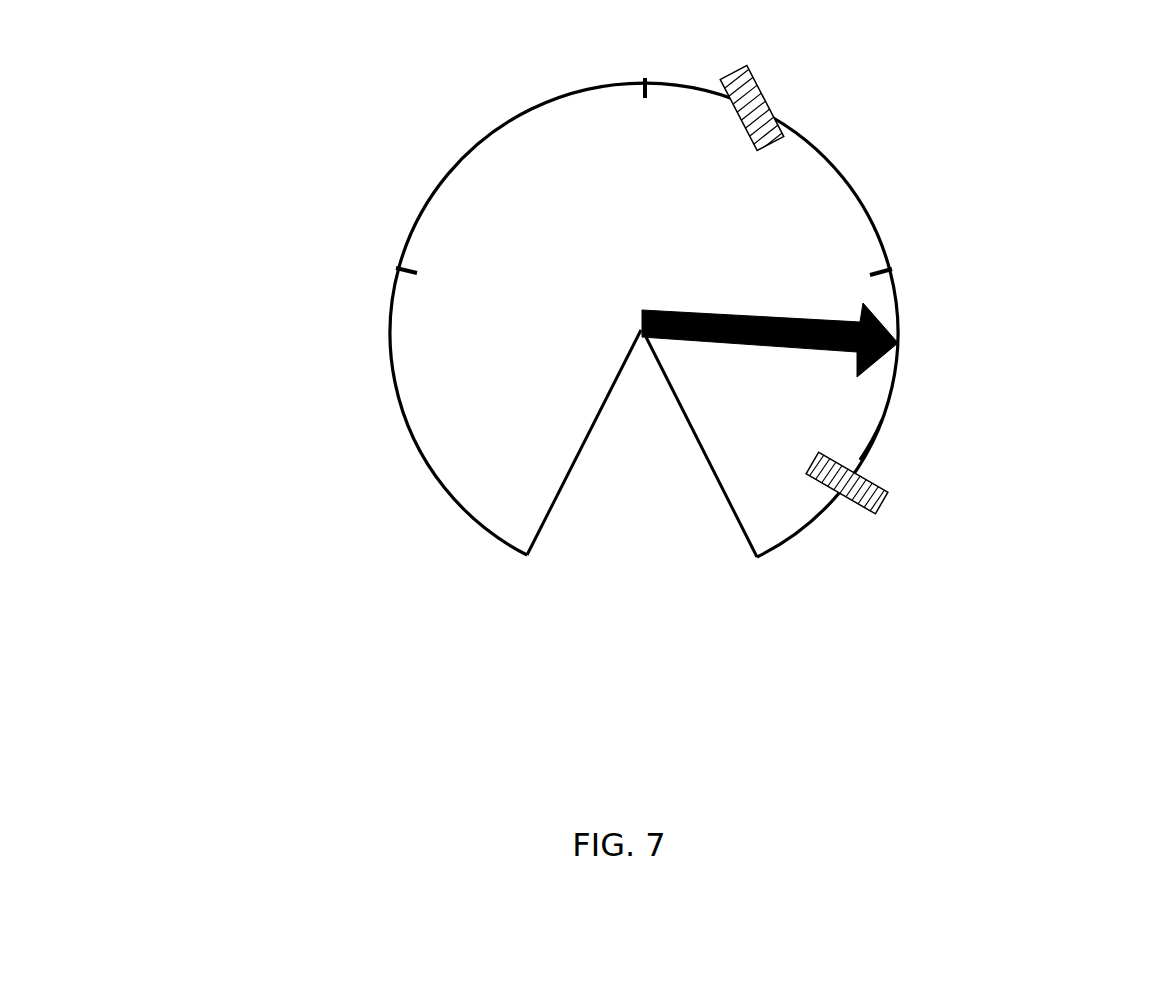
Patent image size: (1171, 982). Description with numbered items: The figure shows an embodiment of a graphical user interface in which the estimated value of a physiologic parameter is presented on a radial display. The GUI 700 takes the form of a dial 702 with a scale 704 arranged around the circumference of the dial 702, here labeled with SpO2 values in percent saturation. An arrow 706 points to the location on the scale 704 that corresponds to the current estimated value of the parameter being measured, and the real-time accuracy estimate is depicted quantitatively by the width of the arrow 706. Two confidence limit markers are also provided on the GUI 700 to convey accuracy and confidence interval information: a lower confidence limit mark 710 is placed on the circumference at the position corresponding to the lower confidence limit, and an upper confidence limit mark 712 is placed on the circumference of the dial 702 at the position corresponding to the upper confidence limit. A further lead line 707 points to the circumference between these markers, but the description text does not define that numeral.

The GUI 700 is at (270, 152).
The dial 702 is at (455, 413).
The scale 704 is at (466, 609).
The arrow 706 is at (752, 318).
The scale region 707 is at (873, 443).
The lower confidence limit mark 710 is at (773, 77).
The upper confidence limit mark 712 is at (875, 513).